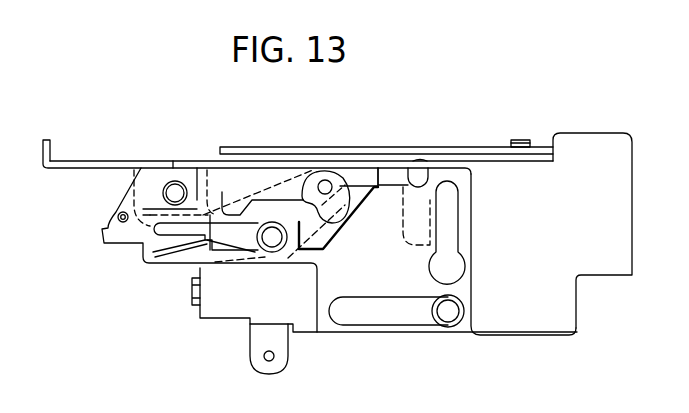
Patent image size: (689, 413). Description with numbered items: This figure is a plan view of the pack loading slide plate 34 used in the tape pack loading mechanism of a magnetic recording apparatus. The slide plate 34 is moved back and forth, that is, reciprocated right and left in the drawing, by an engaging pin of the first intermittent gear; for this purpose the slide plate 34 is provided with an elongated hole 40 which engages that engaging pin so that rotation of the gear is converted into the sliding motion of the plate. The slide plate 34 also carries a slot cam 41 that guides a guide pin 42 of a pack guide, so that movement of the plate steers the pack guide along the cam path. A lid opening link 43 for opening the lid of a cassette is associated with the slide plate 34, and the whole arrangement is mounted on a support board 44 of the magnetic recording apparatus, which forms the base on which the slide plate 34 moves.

The slide plate 34 is at (327, 320).
The elongated hole 40 is at (458, 218).
The slot cam 41 is at (359, 193).
The guide pin 42 is at (418, 176).
The lid opening link 43 is at (113, 243).
The support board 44 is at (537, 307).